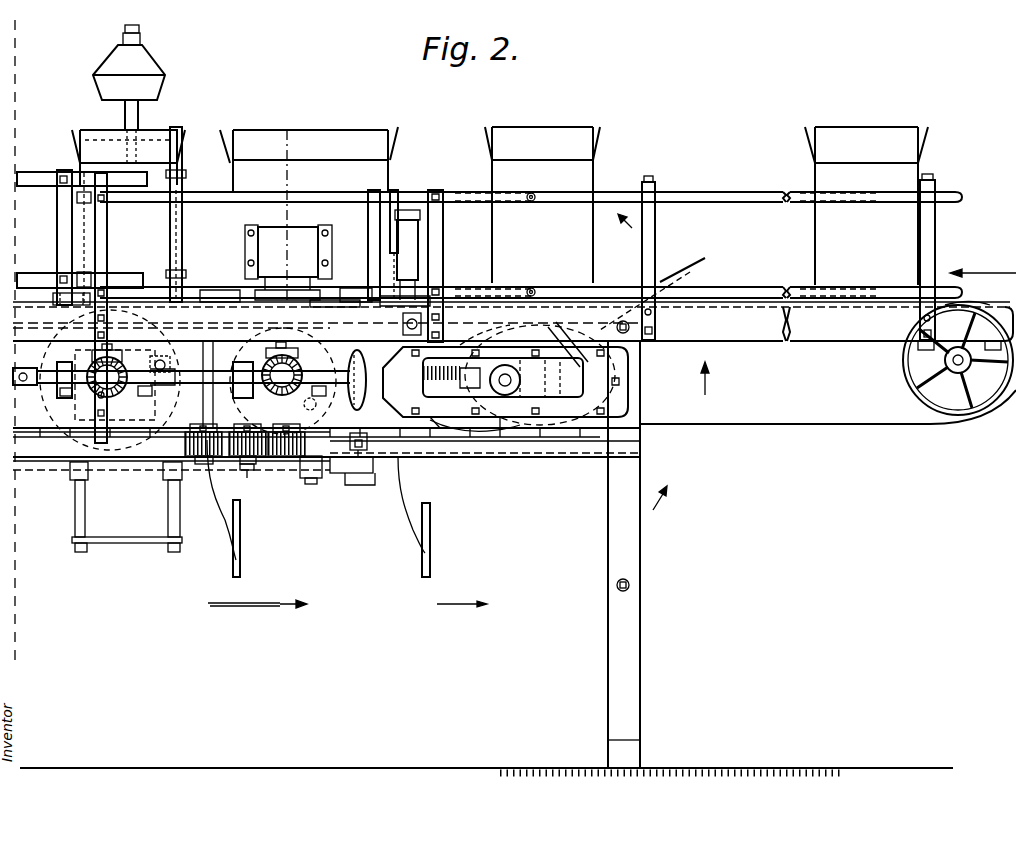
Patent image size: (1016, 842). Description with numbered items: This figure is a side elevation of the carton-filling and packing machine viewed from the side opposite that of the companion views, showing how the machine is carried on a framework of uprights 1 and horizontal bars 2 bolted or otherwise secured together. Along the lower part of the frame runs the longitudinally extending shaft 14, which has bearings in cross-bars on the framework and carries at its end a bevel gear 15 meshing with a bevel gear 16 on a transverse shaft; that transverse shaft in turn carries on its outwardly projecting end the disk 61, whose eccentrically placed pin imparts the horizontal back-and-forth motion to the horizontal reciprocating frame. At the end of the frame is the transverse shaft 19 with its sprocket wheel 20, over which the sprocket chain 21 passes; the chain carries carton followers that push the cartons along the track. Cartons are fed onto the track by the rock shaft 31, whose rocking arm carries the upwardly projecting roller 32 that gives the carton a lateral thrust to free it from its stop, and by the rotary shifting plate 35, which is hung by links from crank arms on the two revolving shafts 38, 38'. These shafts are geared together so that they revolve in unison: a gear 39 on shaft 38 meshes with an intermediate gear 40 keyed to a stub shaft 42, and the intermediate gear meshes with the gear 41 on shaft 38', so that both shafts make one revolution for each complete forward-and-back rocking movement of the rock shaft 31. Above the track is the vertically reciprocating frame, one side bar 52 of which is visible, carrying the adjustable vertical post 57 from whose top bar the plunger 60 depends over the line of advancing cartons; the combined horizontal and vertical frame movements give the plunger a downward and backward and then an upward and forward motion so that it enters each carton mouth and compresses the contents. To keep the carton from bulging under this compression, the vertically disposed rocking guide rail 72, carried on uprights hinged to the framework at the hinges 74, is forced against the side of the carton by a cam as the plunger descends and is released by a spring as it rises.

The uprights 1 is at (636, 553).
The horizontal bars 2 is at (560, 468).
The longitudinally extending shaft 14 is at (168, 380).
The bevel gear 15 is at (97, 392).
The bevel gear 16 is at (118, 395).
The transverse shaft 19 is at (521, 387).
The sprocket wheel 20 is at (560, 392).
The sprocket chain 21 is at (507, 437).
The rock shaft 31 is at (363, 470).
The roller 32 is at (410, 247).
The shifting plate 35 is at (280, 272).
The shaft 38 is at (188, 380).
The shaft 38' is at (252, 370).
The gear 39 is at (280, 465).
The intermediate gear 40 is at (248, 478).
The gear 41 is at (197, 464).
The stub shaft 42 is at (235, 464).
The side bar 52 is at (184, 237).
The vertical post 57 is at (134, 116).
The plunger 60 is at (163, 82).
The disk 61 is at (40, 388).
The rocking guide rail 72 is at (42, 175).
The hinges 74 is at (57, 292).